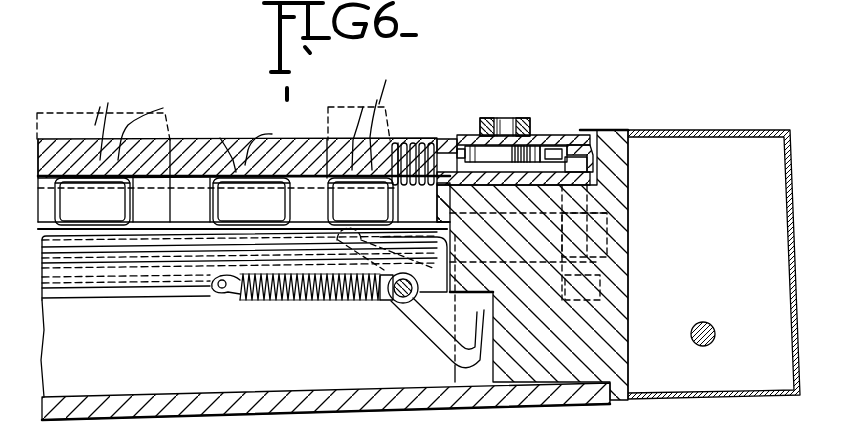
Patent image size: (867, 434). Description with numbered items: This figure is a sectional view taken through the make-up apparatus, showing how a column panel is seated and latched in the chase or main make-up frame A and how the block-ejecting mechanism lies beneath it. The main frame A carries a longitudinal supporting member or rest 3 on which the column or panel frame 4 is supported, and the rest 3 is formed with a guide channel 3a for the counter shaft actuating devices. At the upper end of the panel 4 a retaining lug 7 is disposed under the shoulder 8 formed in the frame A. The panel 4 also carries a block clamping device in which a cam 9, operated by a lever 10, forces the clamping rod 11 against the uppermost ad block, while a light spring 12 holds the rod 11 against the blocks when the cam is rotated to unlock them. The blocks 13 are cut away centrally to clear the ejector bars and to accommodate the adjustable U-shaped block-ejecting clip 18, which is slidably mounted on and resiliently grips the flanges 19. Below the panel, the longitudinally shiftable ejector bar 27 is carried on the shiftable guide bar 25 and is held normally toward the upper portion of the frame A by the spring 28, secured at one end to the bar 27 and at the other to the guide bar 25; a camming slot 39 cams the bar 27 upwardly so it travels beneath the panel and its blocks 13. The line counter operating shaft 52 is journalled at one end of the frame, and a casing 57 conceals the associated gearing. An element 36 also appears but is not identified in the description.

The longitudinal supporting member 3 is at (414, 224).
The guide channel 3a is at (450, 240).
The column or panel frame 4 is at (460, 141).
The retaining lug 7 is at (590, 150).
The shoulder 8 is at (582, 140).
The cam 9 is at (478, 135).
The lever 10 is at (525, 120).
The clamping rod 11 is at (402, 140).
The light spring 12 is at (442, 139).
The block 13 is at (231, 128).
The block-ejecting clip 18 is at (210, 198).
The flange 19 is at (220, 113).
The shiftable guide bar 25 is at (393, 313).
The ejector bar 27 is at (106, 288).
The spring 28 is at (321, 303).
The recess 36 is at (453, 285).
The camming slot 39 is at (443, 338).
The line counter operating shaft 52 is at (707, 322).
The casing 57 is at (787, 119).
The main make-up frame A is at (614, 133).